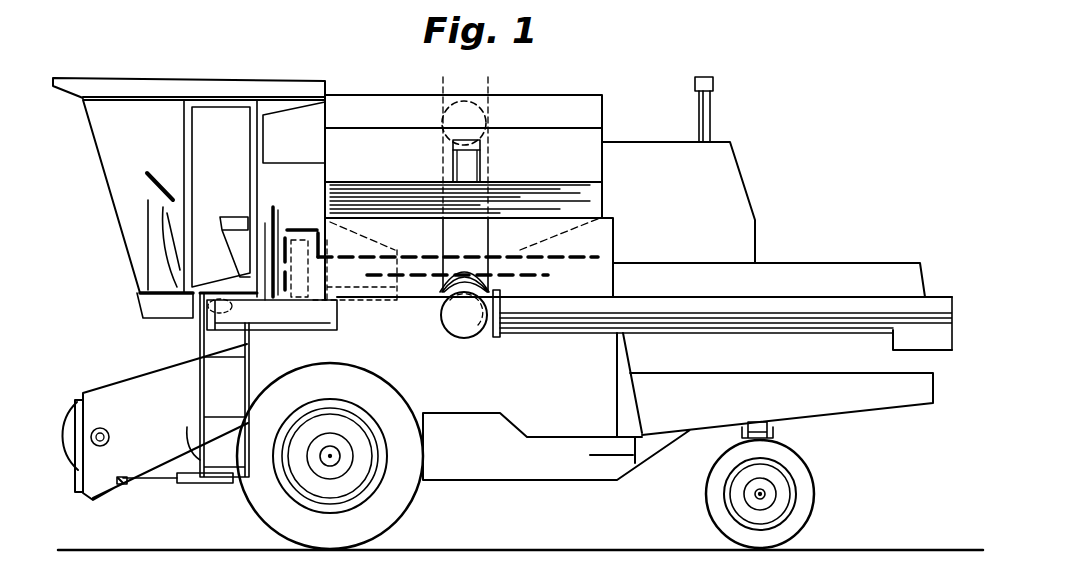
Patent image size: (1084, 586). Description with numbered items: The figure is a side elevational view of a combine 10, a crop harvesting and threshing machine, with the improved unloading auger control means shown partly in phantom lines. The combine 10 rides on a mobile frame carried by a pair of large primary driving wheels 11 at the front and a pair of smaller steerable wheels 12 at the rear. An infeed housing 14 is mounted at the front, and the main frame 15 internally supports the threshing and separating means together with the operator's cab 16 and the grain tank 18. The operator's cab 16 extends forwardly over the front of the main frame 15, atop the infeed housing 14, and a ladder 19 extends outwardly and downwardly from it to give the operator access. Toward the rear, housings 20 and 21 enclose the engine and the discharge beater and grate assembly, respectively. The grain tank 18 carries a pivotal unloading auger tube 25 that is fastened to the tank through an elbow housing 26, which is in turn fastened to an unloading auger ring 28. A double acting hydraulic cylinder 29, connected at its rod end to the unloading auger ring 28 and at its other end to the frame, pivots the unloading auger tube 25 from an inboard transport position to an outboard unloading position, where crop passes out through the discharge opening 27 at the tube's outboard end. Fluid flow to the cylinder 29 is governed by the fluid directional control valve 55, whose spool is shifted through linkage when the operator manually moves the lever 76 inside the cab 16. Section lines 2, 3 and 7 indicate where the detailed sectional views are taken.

The combine 10 is at (625, 65).
The primary driving wheels 11 is at (421, 498).
The steerable wheels 12 is at (712, 498).
The infeed housing 14 is at (137, 383).
The main frame 15 is at (133, 322).
The operator's cab 16 is at (210, 79).
The grain tank 18 is at (469, 196).
The ladder 19 is at (187, 485).
The engine housing 20 is at (740, 165).
The discharge beater and grate housing 21 is at (870, 262).
The unloading auger tube 25 is at (480, 97).
The elbow housing 26 is at (470, 328).
The discharge opening 27 is at (482, 155).
The unloading auger ring 28 is at (506, 284).
The double acting hydraulic cylinder 29 is at (370, 284).
The fluid directional control valve 55 is at (218, 303).
The lever 76 is at (293, 230).
The section line 2 is at (140, 292).
The section line 3 is at (407, 258).
The section line 7 is at (163, 340).